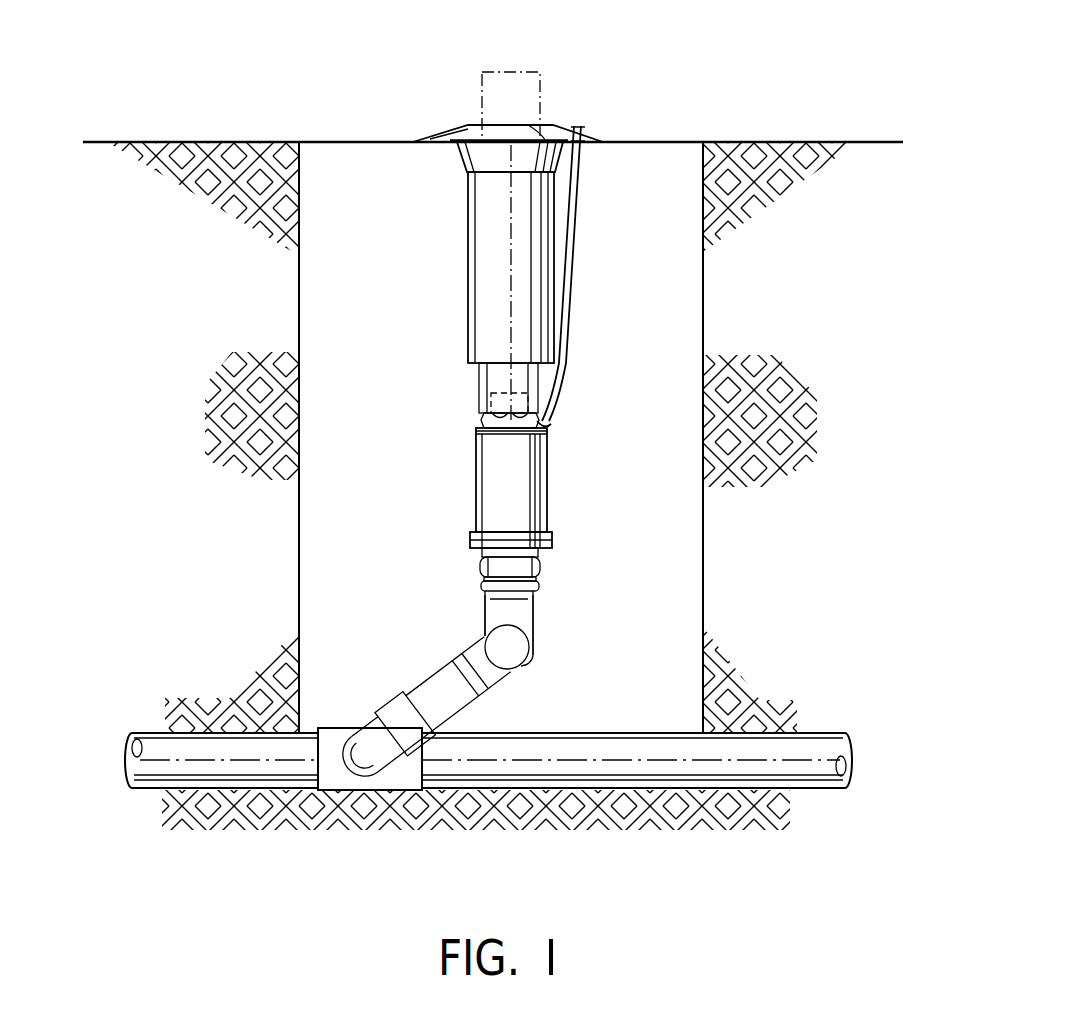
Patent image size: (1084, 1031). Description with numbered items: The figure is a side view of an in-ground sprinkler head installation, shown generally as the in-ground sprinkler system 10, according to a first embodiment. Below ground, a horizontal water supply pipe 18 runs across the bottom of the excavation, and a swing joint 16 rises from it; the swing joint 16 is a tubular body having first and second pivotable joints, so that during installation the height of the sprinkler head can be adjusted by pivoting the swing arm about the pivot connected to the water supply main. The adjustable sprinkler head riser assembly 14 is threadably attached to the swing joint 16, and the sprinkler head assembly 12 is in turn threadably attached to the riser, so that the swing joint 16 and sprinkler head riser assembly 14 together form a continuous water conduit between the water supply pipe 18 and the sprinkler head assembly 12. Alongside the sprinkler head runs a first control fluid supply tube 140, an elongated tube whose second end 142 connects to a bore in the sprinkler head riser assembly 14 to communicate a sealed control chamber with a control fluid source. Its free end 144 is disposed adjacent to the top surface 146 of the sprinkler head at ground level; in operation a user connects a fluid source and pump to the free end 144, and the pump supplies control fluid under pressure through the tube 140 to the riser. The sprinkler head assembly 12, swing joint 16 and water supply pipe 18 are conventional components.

The in-ground sprinkler system 10 is at (680, 90).
The sprinkler head assembly 12 is at (468, 277).
The sprinkler head riser assembly 14 is at (550, 492).
The swing joint 16 is at (443, 672).
The water supply pipe 18 is at (594, 733).
The first control fluid supply tube 140 is at (581, 298).
The second end 142 is at (548, 425).
The free end 144 is at (583, 133).
The top surface 146 is at (470, 122).